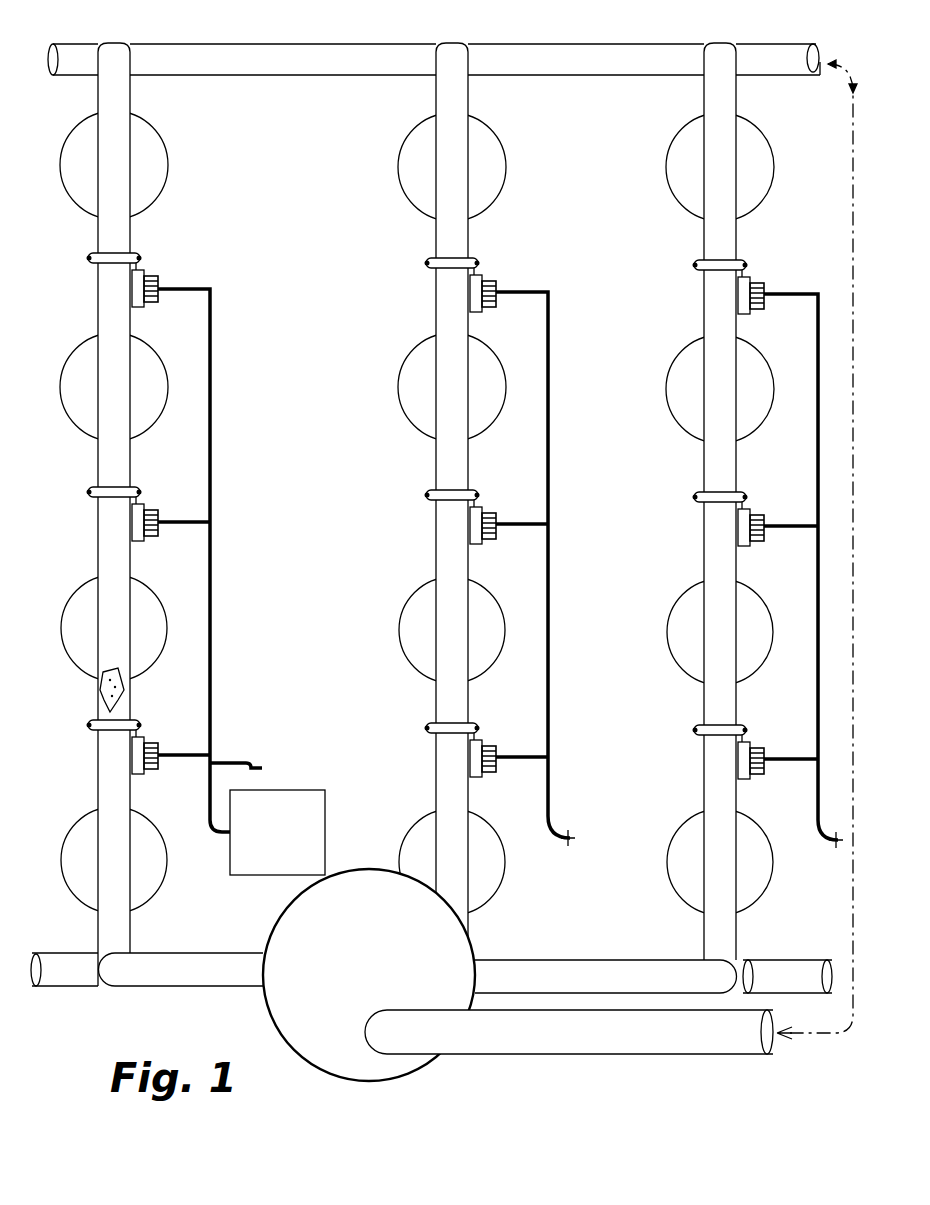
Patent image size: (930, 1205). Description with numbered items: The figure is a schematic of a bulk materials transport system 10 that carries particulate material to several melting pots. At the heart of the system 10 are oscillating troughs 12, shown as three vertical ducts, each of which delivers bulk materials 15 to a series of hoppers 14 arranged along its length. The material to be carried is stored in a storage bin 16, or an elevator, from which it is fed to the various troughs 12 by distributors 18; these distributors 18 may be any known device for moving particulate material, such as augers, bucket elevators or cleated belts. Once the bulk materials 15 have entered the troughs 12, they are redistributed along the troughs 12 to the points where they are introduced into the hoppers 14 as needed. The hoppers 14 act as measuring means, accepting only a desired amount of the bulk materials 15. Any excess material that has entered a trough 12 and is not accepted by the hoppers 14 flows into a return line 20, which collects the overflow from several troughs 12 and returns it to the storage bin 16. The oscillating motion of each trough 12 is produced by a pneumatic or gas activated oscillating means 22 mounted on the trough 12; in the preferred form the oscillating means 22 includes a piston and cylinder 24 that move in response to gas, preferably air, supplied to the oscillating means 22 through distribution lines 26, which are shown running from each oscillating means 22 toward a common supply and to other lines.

The bulk materials transport system 10 is at (290, 270).
The oscillating trough 12 is at (98, 550).
The hopper 14 is at (172, 165).
The bulk materials 15 is at (122, 690).
The storage bin 16 is at (360, 969).
The distributor 18 is at (185, 953).
The return line 20 is at (617, 77).
The oscillating means 22 is at (157, 532).
The piston and cylinder 24 is at (138, 542).
The distribution line 26 is at (210, 480).